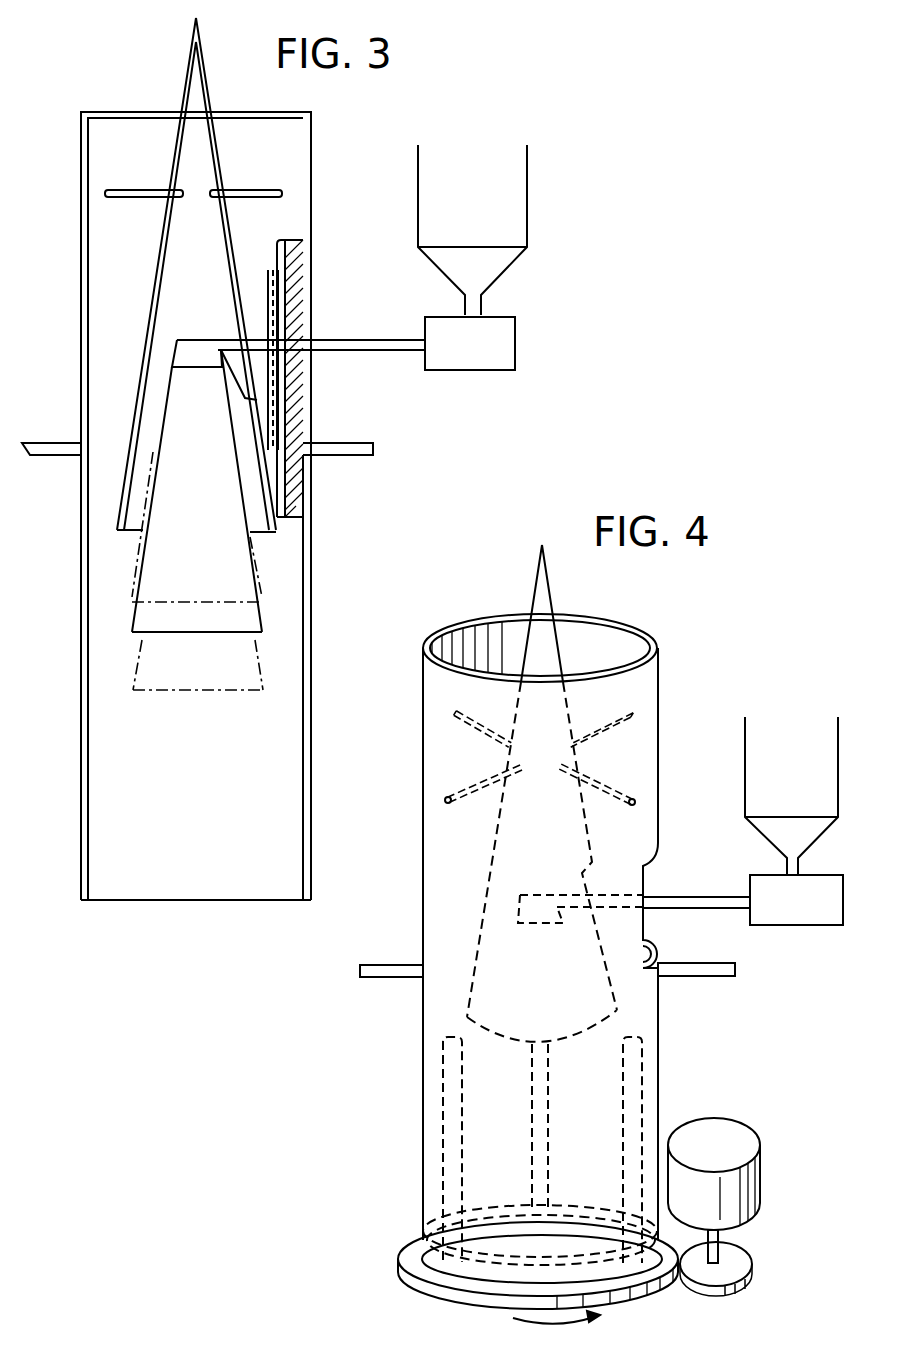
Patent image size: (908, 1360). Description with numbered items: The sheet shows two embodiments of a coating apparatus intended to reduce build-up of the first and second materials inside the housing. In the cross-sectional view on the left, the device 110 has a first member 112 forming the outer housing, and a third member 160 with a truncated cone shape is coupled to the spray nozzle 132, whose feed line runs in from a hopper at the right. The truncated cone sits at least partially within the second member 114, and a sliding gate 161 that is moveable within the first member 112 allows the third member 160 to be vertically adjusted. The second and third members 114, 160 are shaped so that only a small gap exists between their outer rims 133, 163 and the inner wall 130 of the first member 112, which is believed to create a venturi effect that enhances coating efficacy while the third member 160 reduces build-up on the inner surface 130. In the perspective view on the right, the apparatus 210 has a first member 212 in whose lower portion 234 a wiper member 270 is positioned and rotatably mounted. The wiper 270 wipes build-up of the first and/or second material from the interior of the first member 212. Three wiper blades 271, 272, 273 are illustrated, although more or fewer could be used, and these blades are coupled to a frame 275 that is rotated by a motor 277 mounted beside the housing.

In FIG. 3, the device 110 is at (318, 545).
In FIG. 3, the first member 112 is at (310, 163).
In FIG. 3, the second member 114 is at (238, 465).
In FIG. 3, the inner surface 130 is at (305, 622).
In FIG. 3, the spray nozzle 132 is at (197, 348).
In FIG. 3, the outer rim 133 is at (117, 530).
In FIG. 3, the third member 160 is at (257, 602).
In FIG. 3, the sliding gate 161 is at (326, 354).
In FIG. 3, the outer rim 163 is at (263, 633).
In FIG. 4, the apparatus 210 is at (597, 892).
In FIG. 4, the first member 212 is at (425, 1112).
In FIG. 4, the lower portion 234 is at (427, 1238).
In FIG. 4, the wiper member 270 is at (545, 1275).
In FIG. 4, the wiper blade 271 is at (640, 1095).
In FIG. 4, the wiper blade 272 is at (547, 1083).
In FIG. 4, the wiper blade 273 is at (445, 1072).
In FIG. 4, the frame 275 is at (433, 1272).
In FIG. 4, the motor 277 is at (752, 1186).